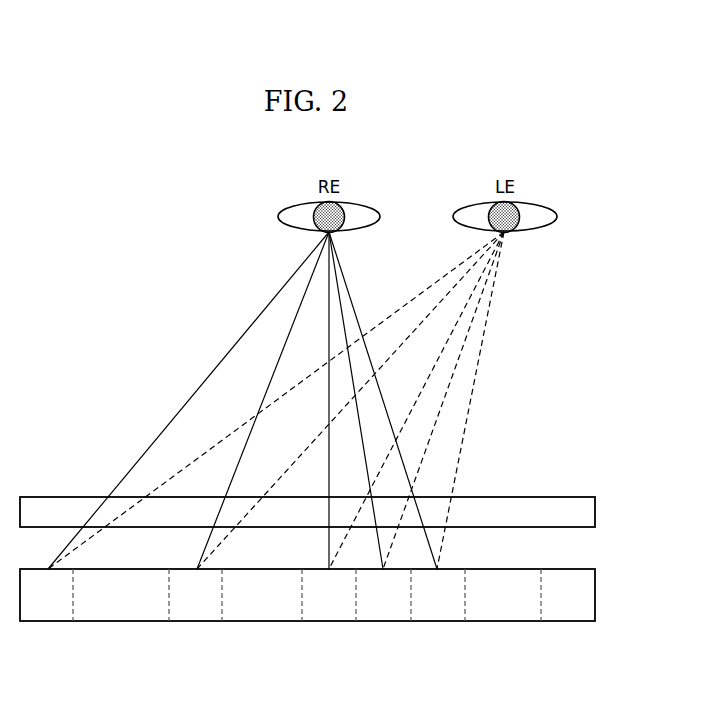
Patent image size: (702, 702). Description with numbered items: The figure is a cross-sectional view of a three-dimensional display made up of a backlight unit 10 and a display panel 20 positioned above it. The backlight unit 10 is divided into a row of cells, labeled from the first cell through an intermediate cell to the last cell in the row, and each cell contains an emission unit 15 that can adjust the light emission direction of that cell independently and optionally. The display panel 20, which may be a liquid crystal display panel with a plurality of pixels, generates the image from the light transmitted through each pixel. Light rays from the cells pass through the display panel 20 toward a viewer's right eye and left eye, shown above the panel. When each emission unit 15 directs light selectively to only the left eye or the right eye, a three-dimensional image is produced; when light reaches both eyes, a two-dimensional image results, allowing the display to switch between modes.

The backlight unit 10 is at (597, 609).
The display panel 20 is at (595, 513).
The emission unit 15 is at (570, 621).